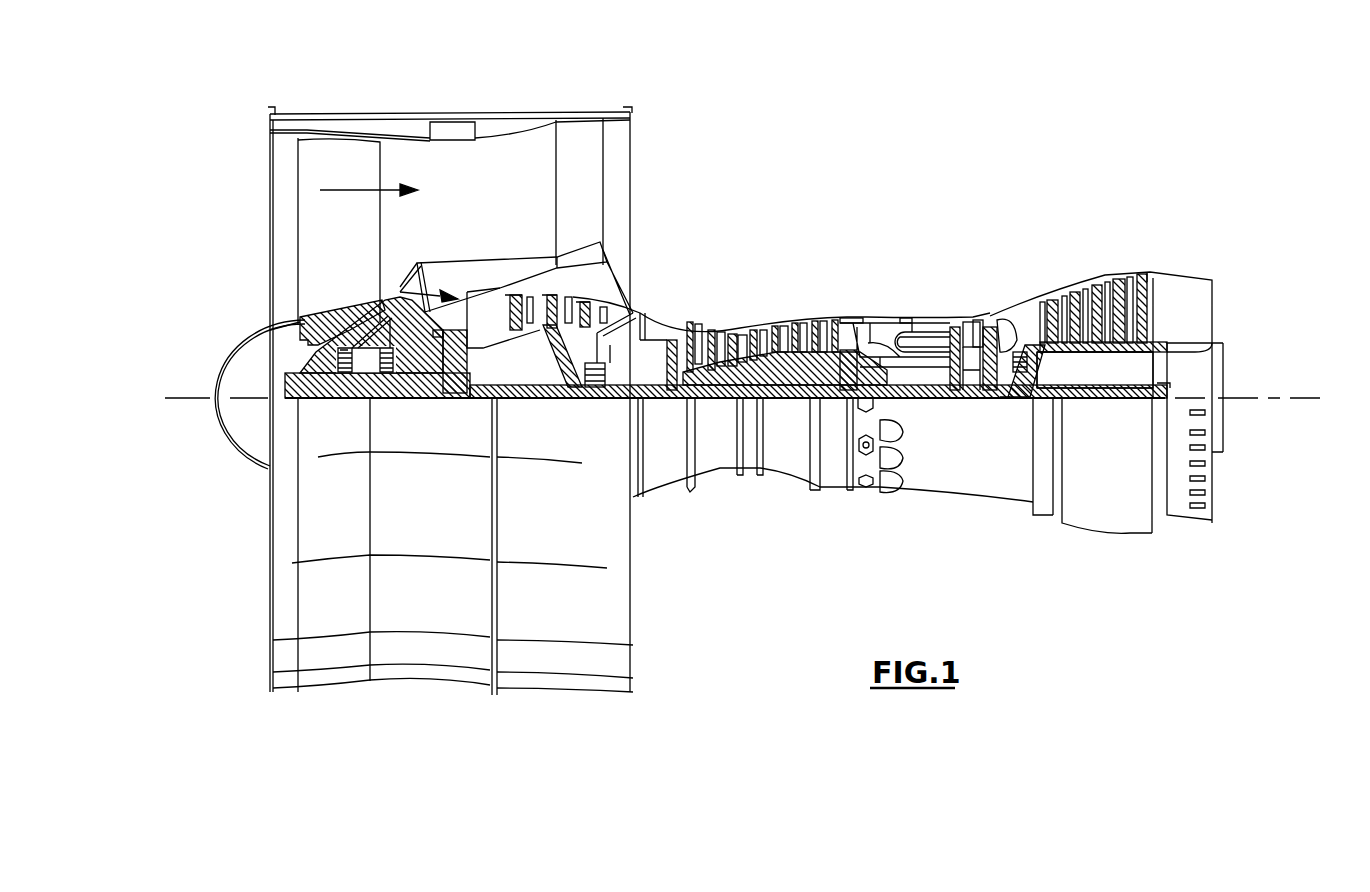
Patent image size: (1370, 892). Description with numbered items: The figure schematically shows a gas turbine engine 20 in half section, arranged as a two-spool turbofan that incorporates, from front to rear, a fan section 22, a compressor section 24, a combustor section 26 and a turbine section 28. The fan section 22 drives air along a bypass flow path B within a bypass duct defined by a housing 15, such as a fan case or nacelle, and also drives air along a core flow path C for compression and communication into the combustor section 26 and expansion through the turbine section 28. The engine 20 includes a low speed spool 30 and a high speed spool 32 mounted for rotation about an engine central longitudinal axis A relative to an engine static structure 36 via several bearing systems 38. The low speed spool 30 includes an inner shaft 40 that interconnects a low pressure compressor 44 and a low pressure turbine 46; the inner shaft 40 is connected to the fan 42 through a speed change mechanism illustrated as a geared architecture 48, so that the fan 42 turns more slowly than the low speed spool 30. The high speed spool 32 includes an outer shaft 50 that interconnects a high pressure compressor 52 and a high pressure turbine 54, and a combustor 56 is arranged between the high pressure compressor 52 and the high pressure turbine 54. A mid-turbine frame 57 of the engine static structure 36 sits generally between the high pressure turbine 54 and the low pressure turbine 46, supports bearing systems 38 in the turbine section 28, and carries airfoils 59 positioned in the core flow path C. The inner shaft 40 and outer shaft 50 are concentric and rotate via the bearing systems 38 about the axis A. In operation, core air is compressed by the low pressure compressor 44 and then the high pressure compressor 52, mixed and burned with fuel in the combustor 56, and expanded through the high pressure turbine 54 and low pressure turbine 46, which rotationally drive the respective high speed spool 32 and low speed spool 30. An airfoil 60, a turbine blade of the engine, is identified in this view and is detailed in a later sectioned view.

The gas turbine engine 20 is at (914, 160).
The fan section 22 is at (380, 105).
The housing 15 is at (452, 120).
The fan 42 is at (352, 243).
The geared architecture 48 is at (458, 380).
The bearing systems 38 is at (588, 380).
The low pressure compressor 44 is at (547, 310).
The compressor section 24 is at (684, 303).
The high pressure compressor 52 is at (763, 372).
The high speed spool 32 is at (830, 367).
The combustor section 26 is at (906, 290).
The combustor 56 is at (905, 340).
The high pressure turbine 54 is at (975, 320).
The mid-turbine frame 57 is at (1015, 306).
The turbine section 28 is at (1054, 246).
The airfoil 60 is at (1053, 320).
The low pressure turbine 46 is at (1100, 290).
The airfoils 59 is at (1037, 347).
The outer shaft 50 is at (918, 392).
The inner shaft 40 is at (653, 403).
The low speed spool 30 is at (790, 408).
The engine static structure 36 is at (831, 494).
The engine central longitudinal axis A is at (1310, 398).
The bypass flow path B is at (355, 188).
The core flow path C is at (410, 290).